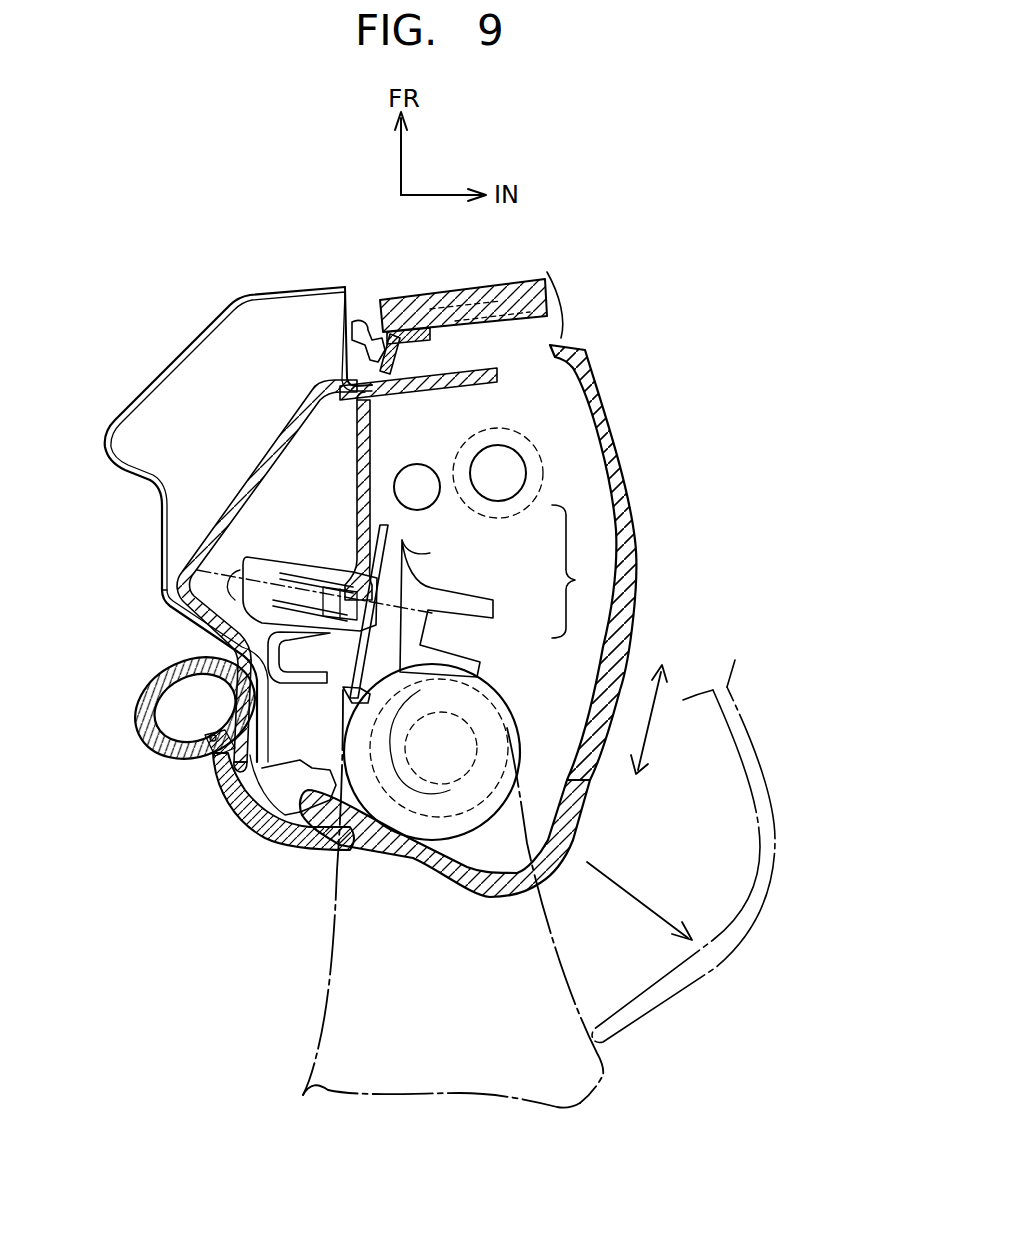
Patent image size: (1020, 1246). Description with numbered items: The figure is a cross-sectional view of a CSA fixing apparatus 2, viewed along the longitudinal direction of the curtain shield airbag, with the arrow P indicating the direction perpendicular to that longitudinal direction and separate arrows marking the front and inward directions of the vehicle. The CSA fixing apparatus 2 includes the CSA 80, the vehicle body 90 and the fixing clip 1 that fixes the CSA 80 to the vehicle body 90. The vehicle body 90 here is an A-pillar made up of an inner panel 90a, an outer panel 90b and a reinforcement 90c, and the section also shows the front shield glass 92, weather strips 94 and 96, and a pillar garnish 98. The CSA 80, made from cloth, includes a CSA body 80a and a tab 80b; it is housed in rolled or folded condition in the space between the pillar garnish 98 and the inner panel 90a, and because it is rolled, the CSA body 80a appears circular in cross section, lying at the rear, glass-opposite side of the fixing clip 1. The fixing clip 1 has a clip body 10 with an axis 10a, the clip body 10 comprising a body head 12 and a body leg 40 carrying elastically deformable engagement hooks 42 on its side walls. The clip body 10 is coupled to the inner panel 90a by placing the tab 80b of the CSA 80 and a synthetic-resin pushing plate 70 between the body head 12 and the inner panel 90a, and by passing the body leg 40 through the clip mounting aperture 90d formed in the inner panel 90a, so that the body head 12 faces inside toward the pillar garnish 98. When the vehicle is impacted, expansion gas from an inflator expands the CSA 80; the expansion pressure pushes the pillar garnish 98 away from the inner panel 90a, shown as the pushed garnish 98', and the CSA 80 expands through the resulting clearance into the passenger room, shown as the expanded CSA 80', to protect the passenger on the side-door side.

The fixing clip 1 is at (432, 586).
The CSA fixing apparatus 2 is at (570, 571).
The clip body 10 is at (372, 770).
The axis of the clip body 10a is at (162, 600).
The body head 12 is at (362, 678).
The body leg 40 is at (267, 566).
The engagement hooks 42 is at (332, 588).
The pushing plate 70 is at (320, 678).
The CSA 80 is at (453, 854).
The CSA body 80a is at (358, 856).
The tab 80b is at (236, 805).
The expanded CSA 80' is at (625, 918).
The vehicle body 90 is at (367, 497).
The inner panel 90a is at (357, 532).
The outer panel 90b is at (242, 291).
The reinforcement 90c is at (268, 458).
The clip mounting aperture 90d is at (258, 628).
The front shield glass 92 is at (548, 288).
The weather strip 94 is at (360, 322).
The weather strip 96 is at (232, 783).
The pillar garnish 98 is at (609, 577).
The pushed A-pillar garnish 98' is at (683, 851).
The direction perpendicular to the longitudinal direction of the CSA P is at (652, 705).